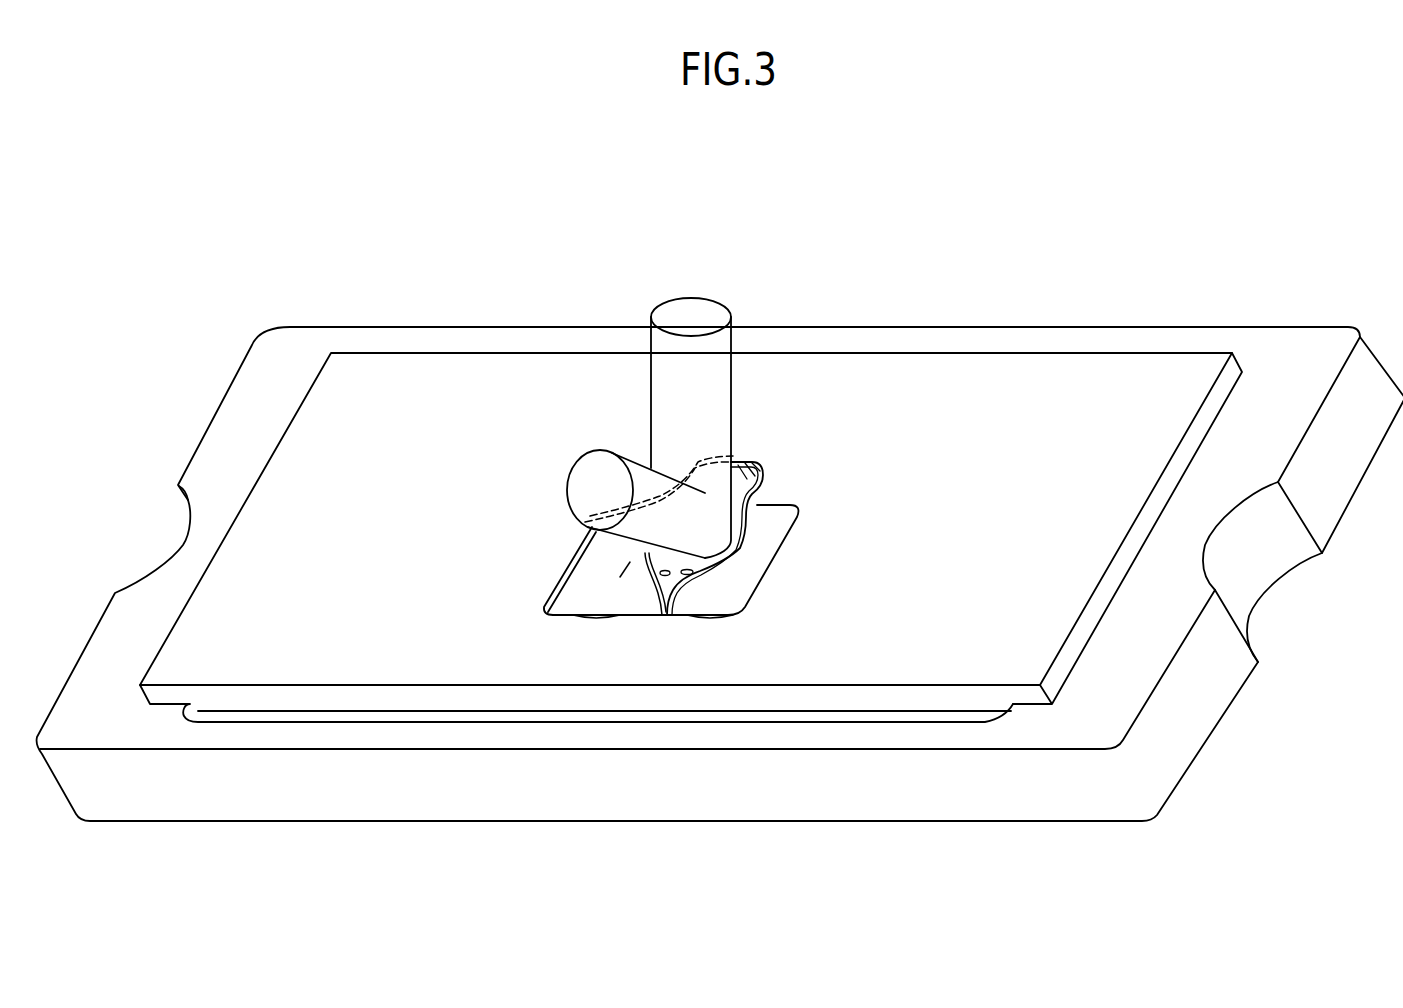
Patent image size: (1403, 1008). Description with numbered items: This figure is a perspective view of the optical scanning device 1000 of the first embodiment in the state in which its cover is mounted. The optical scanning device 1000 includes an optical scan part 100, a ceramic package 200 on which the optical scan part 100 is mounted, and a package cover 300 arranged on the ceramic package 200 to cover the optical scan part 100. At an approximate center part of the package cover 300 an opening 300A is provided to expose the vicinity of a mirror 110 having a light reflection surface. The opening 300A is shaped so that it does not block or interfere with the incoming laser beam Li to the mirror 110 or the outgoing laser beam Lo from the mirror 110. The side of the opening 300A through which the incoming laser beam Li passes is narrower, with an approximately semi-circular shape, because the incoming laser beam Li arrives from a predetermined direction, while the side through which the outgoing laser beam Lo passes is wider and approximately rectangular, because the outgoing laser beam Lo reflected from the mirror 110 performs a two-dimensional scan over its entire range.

The optical scanning device 1000 is at (290, 203).
The optical scan part 100 is at (765, 527).
The mirror 110 is at (648, 550).
The ceramic package 200 is at (1307, 351).
The package cover 300 is at (1142, 365).
The opening 300A is at (688, 617).
The incoming laser beam Li is at (695, 308).
The outgoing laser beam Lo is at (672, 520).